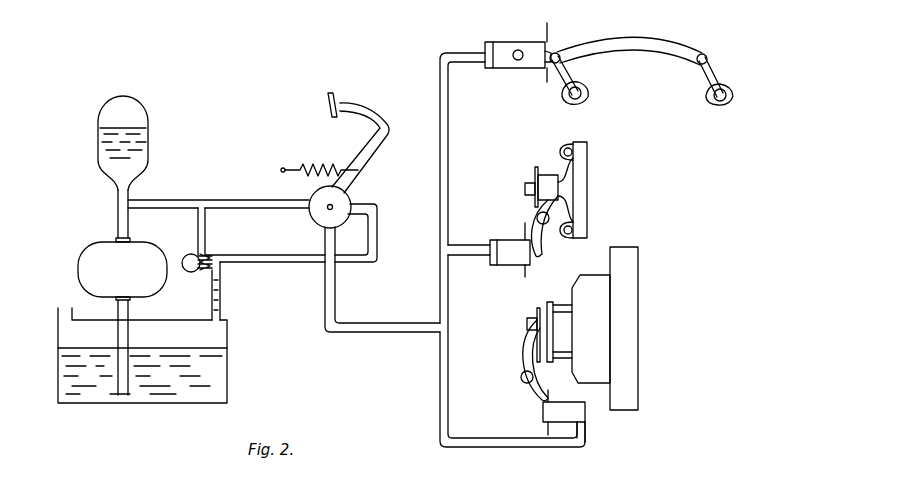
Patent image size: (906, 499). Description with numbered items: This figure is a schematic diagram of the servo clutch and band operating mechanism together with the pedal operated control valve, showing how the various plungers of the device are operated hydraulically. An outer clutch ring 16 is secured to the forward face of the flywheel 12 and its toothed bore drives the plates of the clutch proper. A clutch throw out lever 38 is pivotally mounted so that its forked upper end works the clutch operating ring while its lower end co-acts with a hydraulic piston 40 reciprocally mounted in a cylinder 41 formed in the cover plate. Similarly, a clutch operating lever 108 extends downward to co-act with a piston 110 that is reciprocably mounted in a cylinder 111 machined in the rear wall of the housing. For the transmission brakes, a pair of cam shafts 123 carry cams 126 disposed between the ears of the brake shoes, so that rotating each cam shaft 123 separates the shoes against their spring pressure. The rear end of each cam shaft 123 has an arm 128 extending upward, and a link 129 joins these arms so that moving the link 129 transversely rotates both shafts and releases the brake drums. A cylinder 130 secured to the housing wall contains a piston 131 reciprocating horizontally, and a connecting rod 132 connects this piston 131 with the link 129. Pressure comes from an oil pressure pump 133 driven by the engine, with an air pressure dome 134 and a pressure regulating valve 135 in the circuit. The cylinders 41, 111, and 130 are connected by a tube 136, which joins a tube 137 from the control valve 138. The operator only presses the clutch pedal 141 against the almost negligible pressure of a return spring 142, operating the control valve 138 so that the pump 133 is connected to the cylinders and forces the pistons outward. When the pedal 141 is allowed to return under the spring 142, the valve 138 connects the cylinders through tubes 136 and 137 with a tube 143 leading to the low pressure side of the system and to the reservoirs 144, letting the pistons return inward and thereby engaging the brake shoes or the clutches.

The flywheel 12 is at (624, 328).
The outer clutch ring 16 is at (568, 329).
The clutch throw out lever 38 is at (530, 398).
The hydraulic piston 40 is at (561, 412).
The cylinder 41 is at (583, 410).
The clutch operating lever 108 is at (540, 246).
The piston 110 is at (506, 250).
The cylinder 111 is at (490, 262).
The cam shaft 123 is at (571, 103).
The cam 126 is at (586, 96).
The arm 128 is at (568, 74).
The link 129 is at (624, 43).
The cylinder 130 is at (492, 70).
The piston 131 is at (502, 46).
The connecting rod 132 is at (540, 52).
The oil pressure pump 133 is at (122, 318).
The air pressure dome 134 is at (140, 148).
The pressure regulating valve 135 is at (205, 258).
The tube 136 is at (443, 167).
The tube 137 is at (356, 333).
The control valve 138 is at (338, 201).
The clutch pedal 141 is at (363, 110).
The return spring 142 is at (322, 168).
The tube 143 is at (282, 264).
The reservoir 144 is at (142, 355).